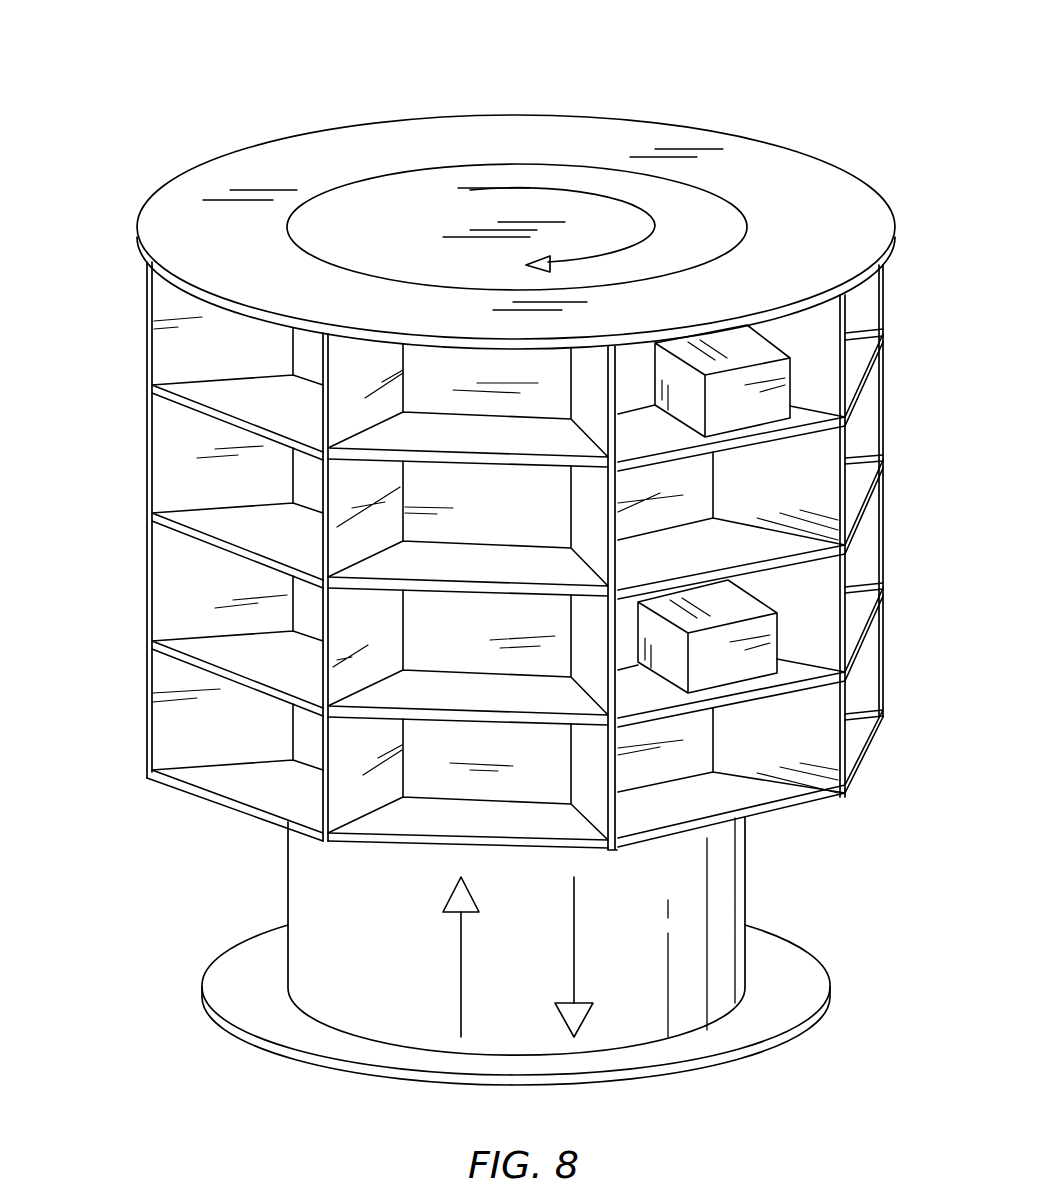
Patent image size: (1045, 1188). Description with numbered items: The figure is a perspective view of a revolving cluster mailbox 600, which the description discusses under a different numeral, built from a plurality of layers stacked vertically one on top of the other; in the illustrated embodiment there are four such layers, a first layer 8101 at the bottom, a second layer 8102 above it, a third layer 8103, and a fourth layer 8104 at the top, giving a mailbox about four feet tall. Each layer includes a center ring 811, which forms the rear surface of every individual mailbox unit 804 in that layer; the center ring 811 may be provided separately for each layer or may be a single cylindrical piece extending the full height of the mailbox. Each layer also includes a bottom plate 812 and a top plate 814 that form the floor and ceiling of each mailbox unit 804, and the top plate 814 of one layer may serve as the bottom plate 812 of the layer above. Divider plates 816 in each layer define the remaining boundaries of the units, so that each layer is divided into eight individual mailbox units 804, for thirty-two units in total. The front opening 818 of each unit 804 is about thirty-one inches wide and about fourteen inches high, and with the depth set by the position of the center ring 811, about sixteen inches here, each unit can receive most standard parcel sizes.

The storage system 600 is at (196, 126).
The fourth layer 8104 is at (133, 322).
The third layer 8103 is at (133, 454).
The second layer 8102 is at (133, 586).
The first layer 8101 is at (133, 718).
The top plate 814 is at (247, 680).
The bottom plate 812 is at (242, 803).
The individual mailbox unit 804 is at (425, 797).
The front opening 818 is at (473, 782).
The center ring 811 is at (543, 787).
The divider plates 816 is at (618, 388).